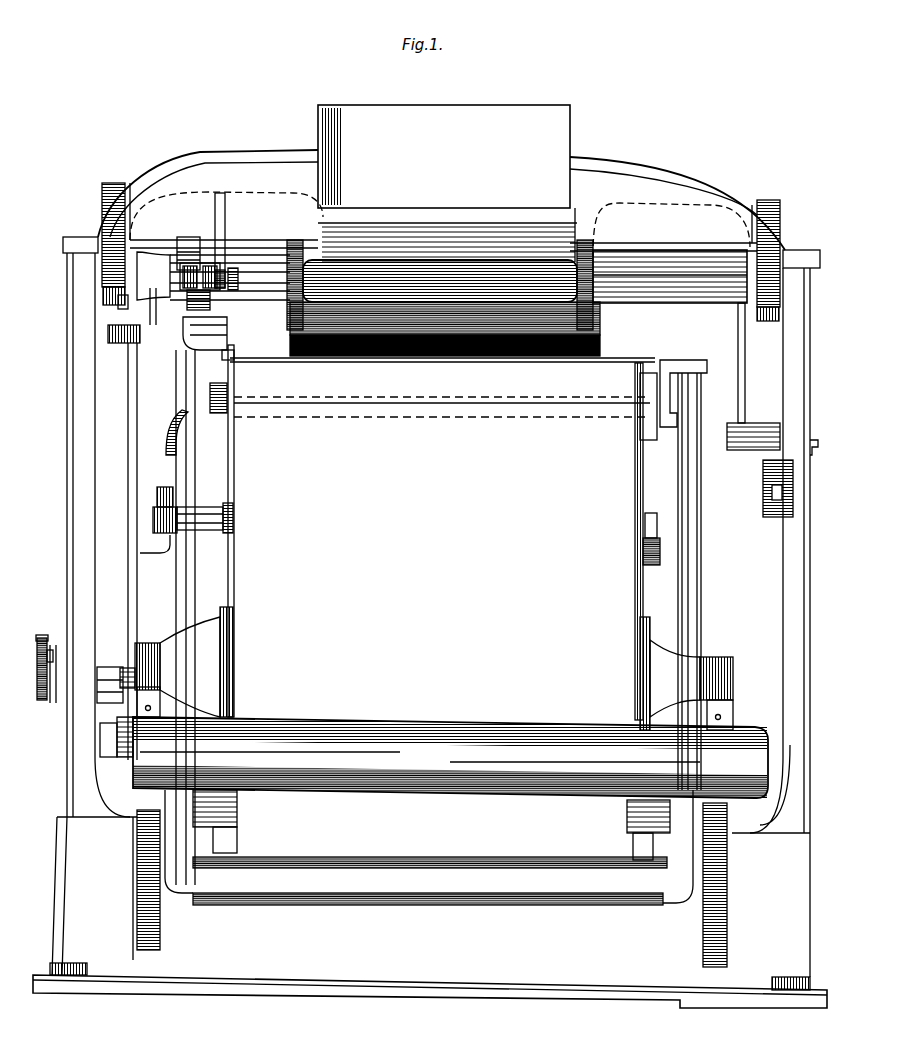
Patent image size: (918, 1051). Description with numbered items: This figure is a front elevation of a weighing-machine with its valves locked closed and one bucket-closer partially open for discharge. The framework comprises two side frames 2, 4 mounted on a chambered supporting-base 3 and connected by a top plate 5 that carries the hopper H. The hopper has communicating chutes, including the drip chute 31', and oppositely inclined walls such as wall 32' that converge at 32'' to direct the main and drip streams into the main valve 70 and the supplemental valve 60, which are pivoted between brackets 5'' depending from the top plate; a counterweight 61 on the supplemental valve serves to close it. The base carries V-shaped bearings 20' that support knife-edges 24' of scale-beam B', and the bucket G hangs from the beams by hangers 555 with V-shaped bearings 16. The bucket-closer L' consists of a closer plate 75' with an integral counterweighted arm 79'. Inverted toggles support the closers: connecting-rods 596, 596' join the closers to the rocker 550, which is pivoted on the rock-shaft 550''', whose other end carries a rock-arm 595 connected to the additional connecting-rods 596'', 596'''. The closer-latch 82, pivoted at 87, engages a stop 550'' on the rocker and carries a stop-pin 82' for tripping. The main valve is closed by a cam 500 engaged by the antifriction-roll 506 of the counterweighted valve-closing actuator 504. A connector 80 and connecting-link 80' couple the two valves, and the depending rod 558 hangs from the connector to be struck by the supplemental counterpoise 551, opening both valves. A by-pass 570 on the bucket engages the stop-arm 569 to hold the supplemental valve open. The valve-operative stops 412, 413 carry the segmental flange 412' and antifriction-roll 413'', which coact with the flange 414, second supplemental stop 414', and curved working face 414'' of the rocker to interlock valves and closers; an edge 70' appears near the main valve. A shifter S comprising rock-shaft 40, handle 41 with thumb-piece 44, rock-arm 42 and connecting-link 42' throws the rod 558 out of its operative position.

The hopper H is at (555, 145).
The top plate 5 is at (441, 203).
The bracket 5'' is at (441, 261).
The side frame 2 is at (77, 573).
The side frame 4 is at (797, 575).
The supporting-base 3 is at (453, 960).
The supplemental chute 31' is at (460, 225).
The hopper wall 32' is at (386, 223).
The convergence of hopper walls 32'' is at (512, 223).
The counterweight 61 is at (533, 290).
The supplemental valve 60 is at (587, 320).
The main valve 70 is at (428, 331).
The bar edge 70' is at (442, 372).
The valve-operative stop 412 is at (186, 280).
The segmental flange 412' is at (227, 240).
The curved working face 414'' is at (267, 232).
The valve-operative stop 413 is at (223, 288).
The antifriction-roll 413'' is at (225, 310).
The flange 414 is at (222, 337).
The second supplemental stop 414' is at (251, 363).
The connector 80 is at (118, 320).
The connecting-link 80' is at (160, 309).
The depending rod 558 is at (137, 412).
The rocker 550 is at (241, 531).
The stop 550'' is at (142, 436).
The rock-shaft 550''' is at (442, 418).
The connecting-rod 596' is at (226, 617).
The connecting-rod 596 is at (217, 617).
The connecting-rod 596'' is at (637, 581).
The connecting-rod 596''' is at (644, 581).
The closer-latch 82 is at (138, 500).
The latch pivot 87 is at (157, 517).
The stop-pin 82' is at (155, 556).
The rock-shaft 40 is at (47, 703).
The thumb-piece 44 is at (42, 638).
The handle 41 is at (53, 657).
The shifter S is at (73, 673).
The rock-arm 42 is at (110, 674).
The connecting-link 42' is at (160, 675).
The hanger 555 is at (153, 643).
The V-shaped bearing 16 is at (165, 713).
The supplemental counterpoise 551 is at (130, 730).
The knife-edge 24' is at (112, 753).
The V-shaped bearing 20' is at (430, 875).
The scale-beam B' is at (450, 769).
The counterweighted arm 79' is at (431, 825).
The bucket-closer L' is at (429, 854).
The closer plate 75' is at (428, 898).
The rock-arm 595 is at (670, 373).
The stop-arm 569 is at (657, 375).
The bucket G is at (603, 541).
The by-pass 570 is at (643, 533).
The cam 500 is at (742, 397).
The antifriction-roll 506 is at (737, 427).
The valve-closing actuator 504 is at (777, 447).